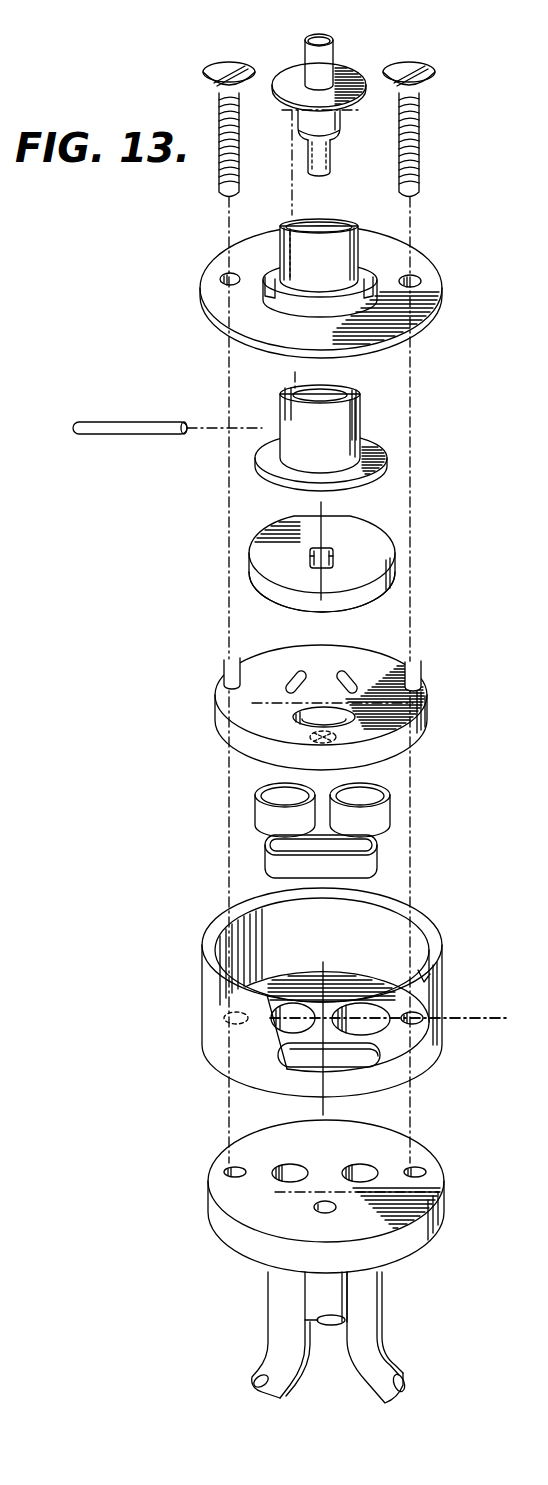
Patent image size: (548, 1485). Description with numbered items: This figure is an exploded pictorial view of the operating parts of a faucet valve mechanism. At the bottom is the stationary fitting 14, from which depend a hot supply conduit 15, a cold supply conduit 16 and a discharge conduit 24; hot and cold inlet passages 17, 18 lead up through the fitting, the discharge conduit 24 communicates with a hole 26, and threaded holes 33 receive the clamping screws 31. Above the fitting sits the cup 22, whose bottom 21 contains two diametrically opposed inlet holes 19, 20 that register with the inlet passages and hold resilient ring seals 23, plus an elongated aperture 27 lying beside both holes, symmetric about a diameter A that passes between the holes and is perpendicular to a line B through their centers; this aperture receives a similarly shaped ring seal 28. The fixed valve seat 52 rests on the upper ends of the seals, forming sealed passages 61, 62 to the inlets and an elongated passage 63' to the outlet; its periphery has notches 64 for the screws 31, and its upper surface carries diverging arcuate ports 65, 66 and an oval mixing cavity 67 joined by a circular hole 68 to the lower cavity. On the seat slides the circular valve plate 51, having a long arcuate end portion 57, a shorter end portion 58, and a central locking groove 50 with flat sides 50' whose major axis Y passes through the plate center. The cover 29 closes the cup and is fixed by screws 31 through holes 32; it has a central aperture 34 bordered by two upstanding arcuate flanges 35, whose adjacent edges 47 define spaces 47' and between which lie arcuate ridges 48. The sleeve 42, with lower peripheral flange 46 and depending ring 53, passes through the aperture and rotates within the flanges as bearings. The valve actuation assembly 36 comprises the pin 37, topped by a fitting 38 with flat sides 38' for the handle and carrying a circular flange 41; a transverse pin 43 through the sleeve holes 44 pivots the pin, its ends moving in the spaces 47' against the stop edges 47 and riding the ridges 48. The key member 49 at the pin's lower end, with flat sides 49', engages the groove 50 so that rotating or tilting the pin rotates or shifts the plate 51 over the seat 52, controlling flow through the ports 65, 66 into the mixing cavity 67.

The fitting 14 is at (329, 1261).
The depending conduit 15 is at (283, 1298).
The depending conduit 16 is at (367, 1328).
The hot inlet passage 17 is at (288, 1173).
The cold inlet passage 18 is at (353, 1172).
The inlet hole 19 is at (295, 1008).
The inlet hole 20 is at (353, 1007).
The bottom of cup 21 is at (393, 1037).
The cup 22 is at (333, 1005).
The resilient ring seals 23 is at (329, 796).
The outlet conduit 24 is at (330, 1292).
The hole 26 is at (317, 1207).
The elongated aperture 27 is at (345, 1057).
The ring seal 28 is at (324, 856).
The cover 29 is at (317, 284).
The screws 31 is at (222, 62).
The holes 32 is at (220, 277).
The threaded holes 33 is at (230, 1170).
The central aperture 34 is at (288, 284).
The arcuate flanges 35 is at (307, 220).
The valve actuation assembly 36 is at (346, 99).
The pin 37 is at (310, 122).
The fitting 38 is at (318, 51).
The flat sides 38' is at (342, 29).
The circular flange 41 is at (347, 70).
The sleeve 42 is at (329, 427).
The transverse pin 43 is at (123, 435).
The holes 44 is at (278, 422).
The peripheral flange 46 is at (324, 462).
The edges 47 is at (361, 255).
The spaces 47' is at (271, 251).
The arcuate ridges 48 is at (324, 272).
The key member 49 is at (329, 156).
The flat parallel sides 49' is at (329, 151).
The locking groove 50 is at (327, 554).
The flat parallel sides 50' is at (327, 578).
The valve plate 51 is at (323, 564).
The valve seat 52 is at (327, 693).
The peripheral ring 53 is at (375, 482).
The long arcuate end portion 57 is at (296, 600).
The short arcuate end portion 58 is at (307, 513).
The sealed passage 61 is at (283, 792).
The sealed passage 62 is at (363, 792).
The elongated passage 63' is at (282, 858).
The notches 64 is at (226, 680).
The arcuate port 65 is at (298, 672).
The arcuate port 66 is at (350, 672).
The mixing cavity 67 is at (345, 714).
The circular hole 68 is at (305, 737).
The diameter A is at (318, 1087).
The line B is at (453, 1017).
The major axis Y is at (350, 580).